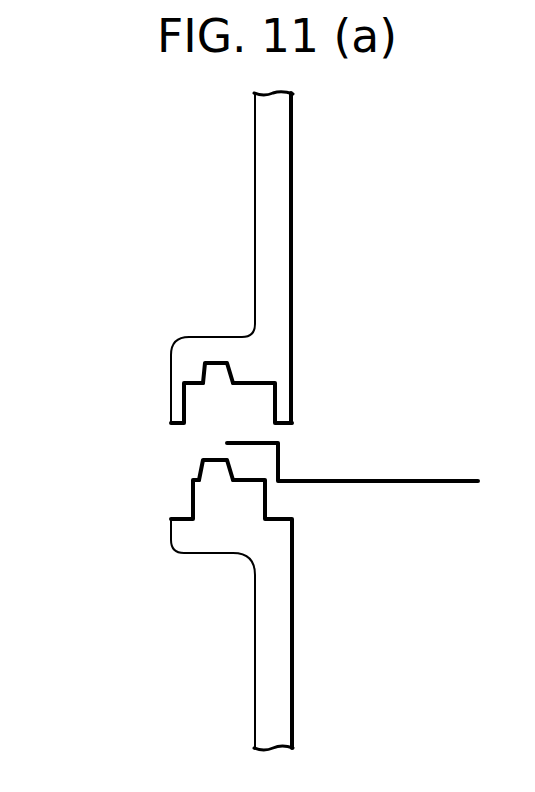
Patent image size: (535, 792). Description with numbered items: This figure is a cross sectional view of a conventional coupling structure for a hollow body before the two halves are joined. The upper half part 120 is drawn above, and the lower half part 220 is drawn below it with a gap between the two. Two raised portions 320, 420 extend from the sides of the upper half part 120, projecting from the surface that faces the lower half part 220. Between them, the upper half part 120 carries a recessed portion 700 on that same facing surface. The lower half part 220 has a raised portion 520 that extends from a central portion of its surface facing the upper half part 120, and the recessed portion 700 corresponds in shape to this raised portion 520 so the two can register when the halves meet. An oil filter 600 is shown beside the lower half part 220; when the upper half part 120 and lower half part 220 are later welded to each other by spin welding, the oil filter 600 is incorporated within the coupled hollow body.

The upper half part 120 is at (273, 248).
The lower half part 220 is at (273, 663).
The raised portion 320 is at (175, 400).
The raised portion 420 is at (283, 408).
The raised portion 520 is at (208, 470).
The oil filter 600 is at (407, 481).
The recessed portion 700 is at (212, 362).